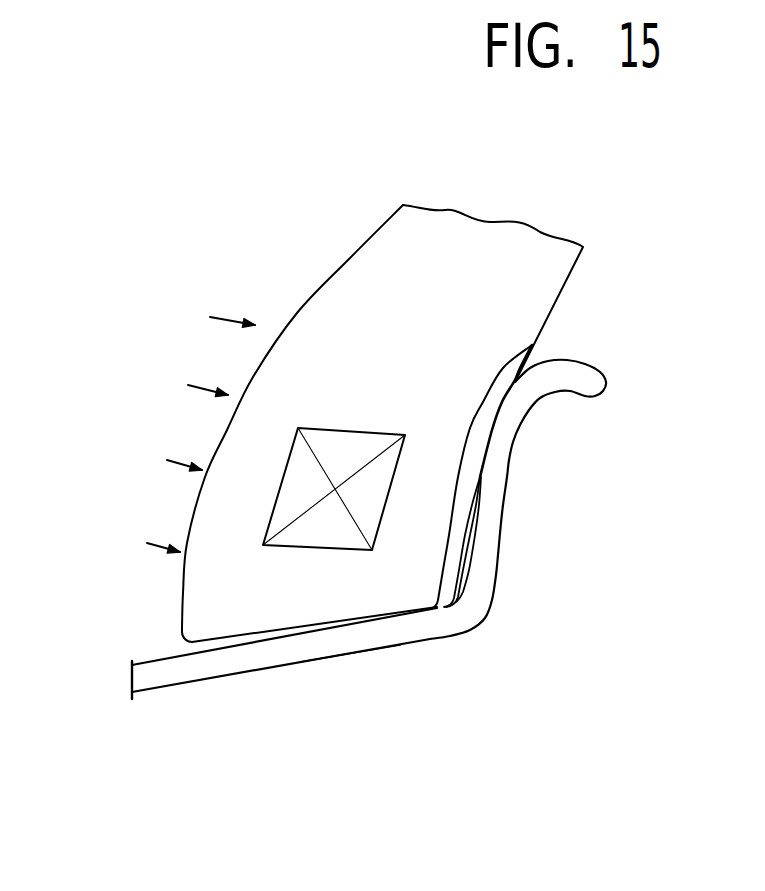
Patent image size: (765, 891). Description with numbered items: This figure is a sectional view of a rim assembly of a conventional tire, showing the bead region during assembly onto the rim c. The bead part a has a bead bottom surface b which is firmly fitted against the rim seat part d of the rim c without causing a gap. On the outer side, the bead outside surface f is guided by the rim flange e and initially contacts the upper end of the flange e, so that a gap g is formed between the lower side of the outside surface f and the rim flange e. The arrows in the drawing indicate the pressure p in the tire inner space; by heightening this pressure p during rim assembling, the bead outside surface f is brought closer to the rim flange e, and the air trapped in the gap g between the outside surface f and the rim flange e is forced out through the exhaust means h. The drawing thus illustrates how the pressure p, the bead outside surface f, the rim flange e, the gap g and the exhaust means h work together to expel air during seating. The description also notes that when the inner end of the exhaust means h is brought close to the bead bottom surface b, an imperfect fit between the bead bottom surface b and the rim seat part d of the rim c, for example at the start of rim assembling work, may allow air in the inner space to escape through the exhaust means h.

The bead part a is at (202, 593).
The bead bottom surface b is at (228, 642).
The rim c is at (373, 660).
The rim seat part d is at (322, 645).
The rim flange e is at (502, 475).
The bead outside surface f is at (468, 543).
The gap g is at (468, 575).
The exhaust means h is at (463, 497).
The pressure p is at (197, 435).